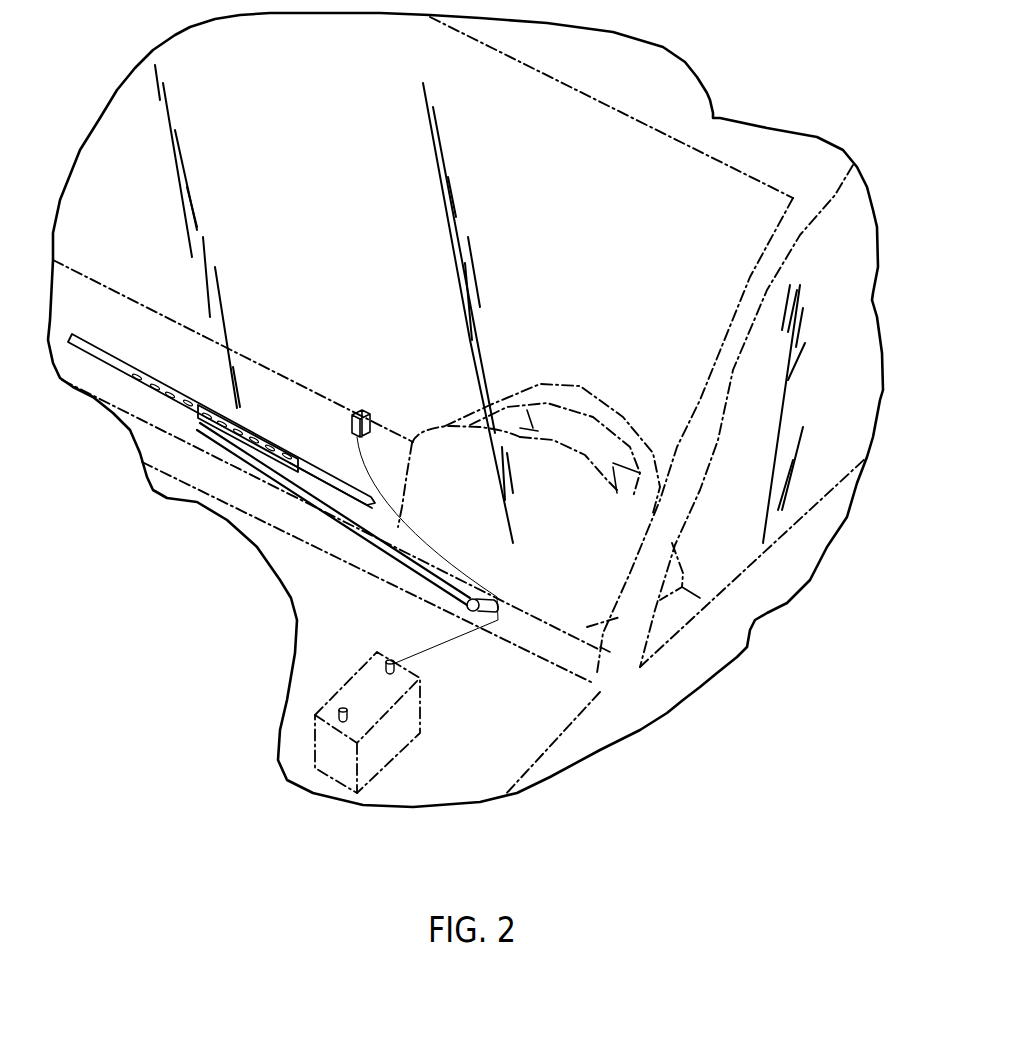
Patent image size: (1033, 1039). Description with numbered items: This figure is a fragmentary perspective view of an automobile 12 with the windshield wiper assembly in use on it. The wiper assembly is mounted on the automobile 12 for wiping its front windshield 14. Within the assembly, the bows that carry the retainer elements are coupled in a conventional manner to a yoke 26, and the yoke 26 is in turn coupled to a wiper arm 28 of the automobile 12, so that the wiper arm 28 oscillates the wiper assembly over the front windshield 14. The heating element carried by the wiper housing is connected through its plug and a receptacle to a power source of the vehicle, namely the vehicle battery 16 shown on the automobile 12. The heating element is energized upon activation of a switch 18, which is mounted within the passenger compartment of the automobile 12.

The automobile 12 is at (612, 705).
The front windshield 14 is at (325, 219).
The vehicle battery 16 is at (380, 745).
The switch 18 is at (363, 412).
The yoke 26 is at (162, 395).
The wiper arm 28 is at (363, 523).